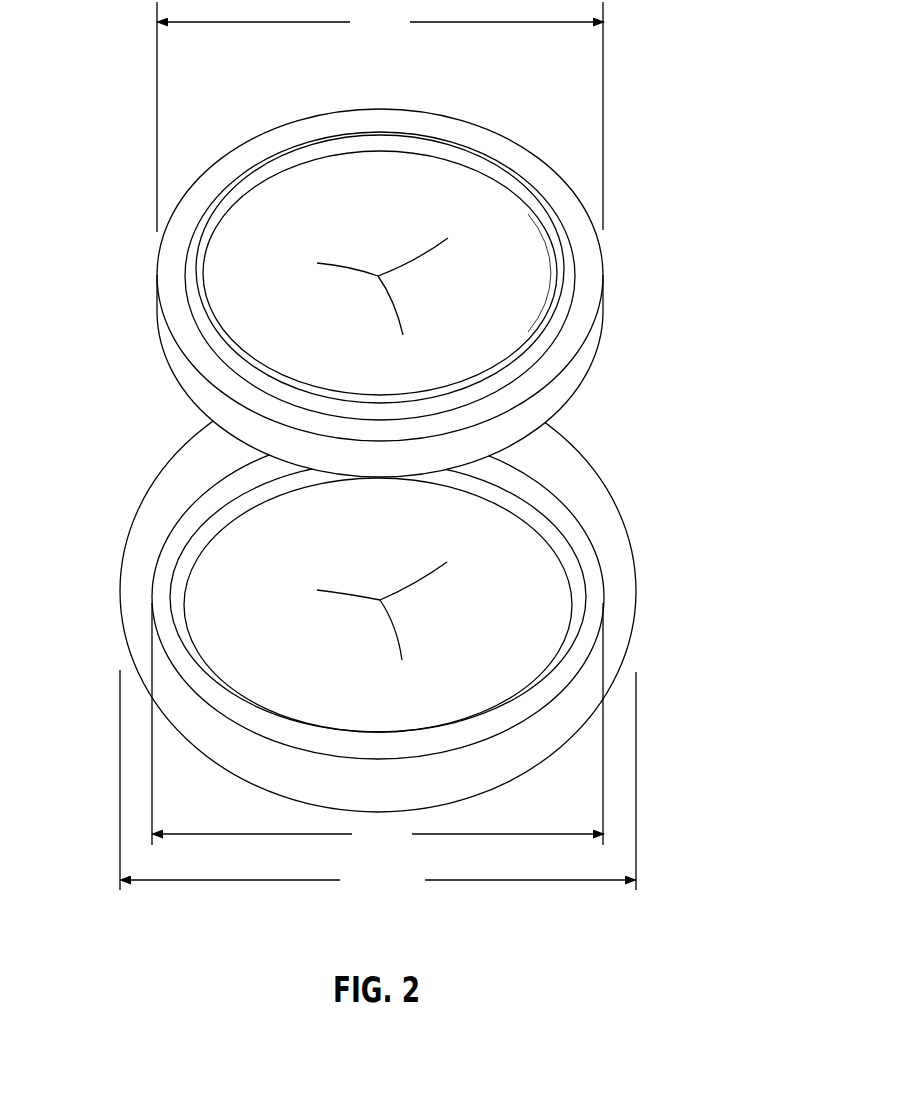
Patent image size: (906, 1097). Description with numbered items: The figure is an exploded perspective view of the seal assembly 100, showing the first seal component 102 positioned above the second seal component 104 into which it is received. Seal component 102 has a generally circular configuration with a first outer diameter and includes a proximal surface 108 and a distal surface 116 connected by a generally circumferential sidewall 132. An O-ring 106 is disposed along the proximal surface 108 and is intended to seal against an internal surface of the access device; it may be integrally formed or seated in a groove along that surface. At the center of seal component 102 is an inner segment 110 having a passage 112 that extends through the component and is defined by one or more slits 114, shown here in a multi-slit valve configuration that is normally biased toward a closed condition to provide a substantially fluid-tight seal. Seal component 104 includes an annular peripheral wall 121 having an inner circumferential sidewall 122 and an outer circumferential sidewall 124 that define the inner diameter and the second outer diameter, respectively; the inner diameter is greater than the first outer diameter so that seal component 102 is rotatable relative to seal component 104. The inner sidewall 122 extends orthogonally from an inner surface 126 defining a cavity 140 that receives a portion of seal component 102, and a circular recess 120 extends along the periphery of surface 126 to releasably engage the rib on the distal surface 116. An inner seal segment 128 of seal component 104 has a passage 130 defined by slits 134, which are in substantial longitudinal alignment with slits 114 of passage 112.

The seal assembly 100 is at (651, 196).
The seal component 102 is at (146, 224).
The seal component 104 is at (646, 661).
The O-ring 106 is at (567, 290).
The proximal surface 108 is at (159, 290).
The inner segment 110 is at (448, 202).
The passage 112 is at (350, 248).
The slits 114 is at (365, 263).
The distal surface 116 is at (188, 398).
The recess 120 is at (178, 610).
The annular peripheral wall 121 is at (503, 773).
The inner circumferential sidewall 122 is at (180, 510).
The outer circumferential sidewall 124 is at (633, 627).
The inner surface 126 is at (545, 630).
The inner seal segment 128 is at (484, 550).
The passage 130 is at (346, 576).
The circumferential sidewall 132 is at (595, 338).
The slits 134 is at (320, 591).
The cavity 140 is at (509, 590).